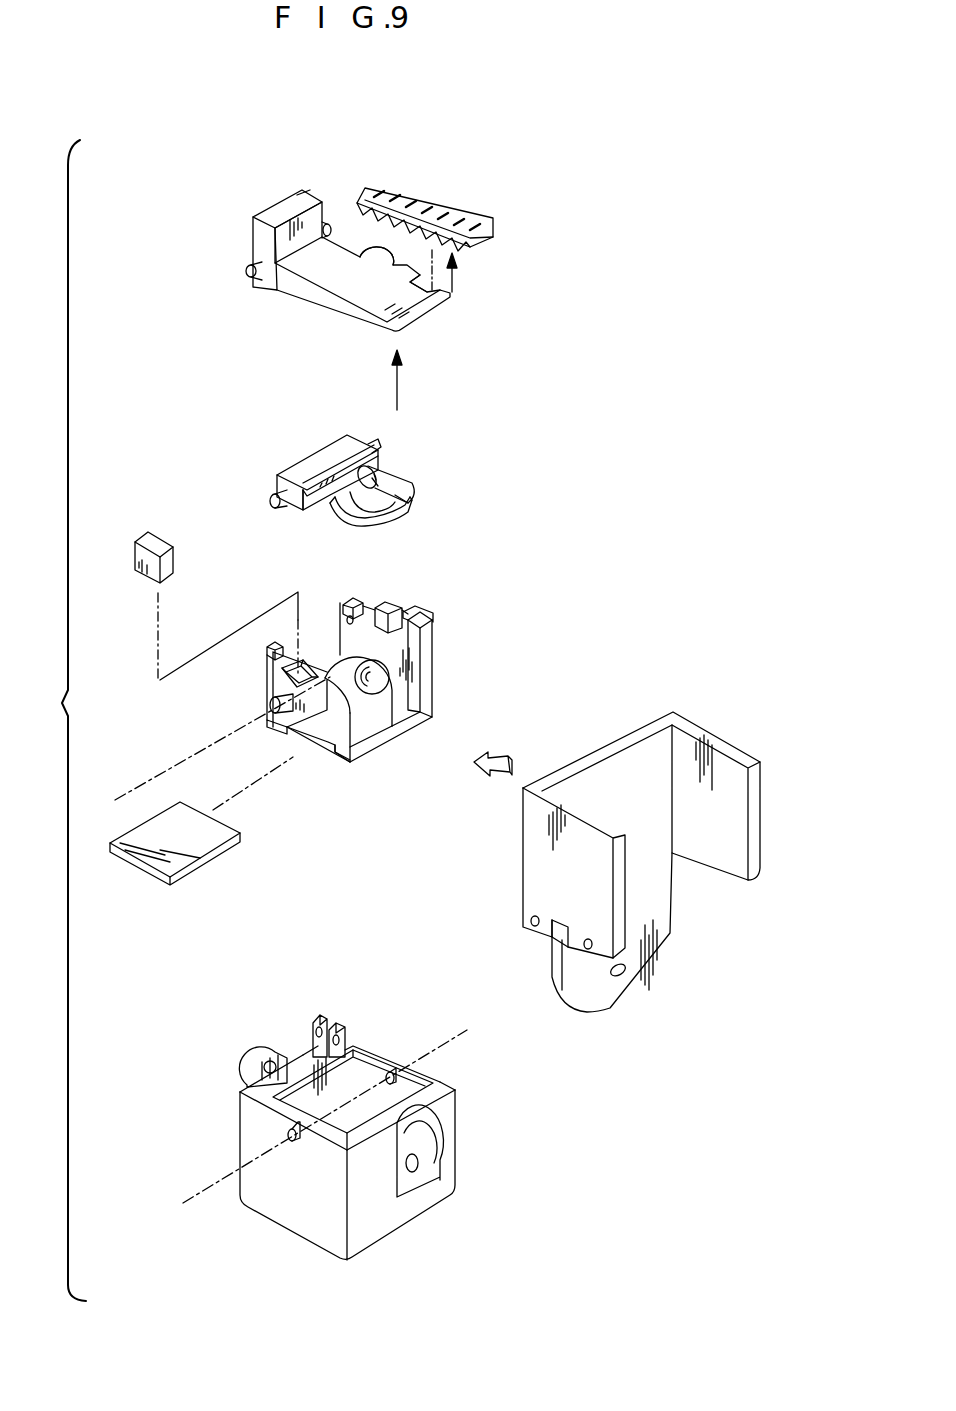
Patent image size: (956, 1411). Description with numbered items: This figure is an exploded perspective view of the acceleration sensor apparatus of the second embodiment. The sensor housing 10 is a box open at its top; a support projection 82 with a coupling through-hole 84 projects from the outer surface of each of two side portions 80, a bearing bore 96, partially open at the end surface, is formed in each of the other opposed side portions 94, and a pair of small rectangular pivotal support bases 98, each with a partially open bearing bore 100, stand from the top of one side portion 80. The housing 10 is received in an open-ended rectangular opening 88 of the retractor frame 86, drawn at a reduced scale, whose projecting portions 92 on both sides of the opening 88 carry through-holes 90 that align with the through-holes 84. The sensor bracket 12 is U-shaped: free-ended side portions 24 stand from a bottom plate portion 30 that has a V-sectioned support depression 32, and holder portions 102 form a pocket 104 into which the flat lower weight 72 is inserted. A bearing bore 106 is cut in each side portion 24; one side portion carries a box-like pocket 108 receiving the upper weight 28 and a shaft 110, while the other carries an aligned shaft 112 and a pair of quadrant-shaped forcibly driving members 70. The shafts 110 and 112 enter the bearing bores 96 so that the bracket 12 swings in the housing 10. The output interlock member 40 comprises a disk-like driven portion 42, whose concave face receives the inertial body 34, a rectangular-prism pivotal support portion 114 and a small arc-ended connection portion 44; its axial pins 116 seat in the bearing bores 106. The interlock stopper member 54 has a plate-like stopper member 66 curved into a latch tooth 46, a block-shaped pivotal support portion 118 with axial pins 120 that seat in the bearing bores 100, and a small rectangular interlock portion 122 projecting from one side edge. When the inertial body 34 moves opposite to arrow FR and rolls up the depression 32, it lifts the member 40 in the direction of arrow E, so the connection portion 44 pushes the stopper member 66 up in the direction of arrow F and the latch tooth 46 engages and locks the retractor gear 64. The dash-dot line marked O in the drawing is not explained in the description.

The sensor housing 10 is at (348, 1115).
The sensor bracket 12 is at (367, 711).
The free-ended side portions 24 is at (427, 657).
The upper weight 28 is at (162, 538).
The bottom plate portion 30 is at (436, 687).
The support depression 32 is at (365, 730).
The inertial body 34 is at (373, 687).
The output interlock member 40 is at (412, 486).
The driven portion 42 is at (392, 525).
The connection portion 44 is at (410, 503).
The latch tooth 46 is at (437, 306).
The interlock stopper member 54 is at (263, 247).
The retractor gear 64 is at (447, 210).
The stopper member 66 is at (300, 280).
The forcibly driving members 70 is at (390, 606).
The lower weight 72 is at (203, 830).
The side portions 80 is at (307, 1055).
The support projection 82 is at (258, 1057).
The through-hole 84 is at (252, 1062).
The retractor frame 86 is at (657, 933).
The rectangular opening 88 is at (565, 940).
The through-hole 90 is at (592, 948).
The projecting portion 92 is at (530, 921).
The side portions 94 is at (418, 1093).
The bearing bore 96 is at (392, 1070).
The pivotal support bases 98 is at (357, 1115).
The bearing bore 100 is at (320, 1015).
The holder portions 102 is at (267, 710).
The pocket 104 is at (303, 742).
The bearing bore 106 is at (345, 612).
The pocket 108 is at (313, 732).
The shaft 110 is at (270, 704).
The shaft 112 is at (435, 618).
The pivotal support portion 114 is at (312, 463).
The axial pins 116 is at (377, 446).
The pivotal support portion 118 is at (284, 204).
The axial pins 120 is at (326, 226).
The interlock portion 122 is at (360, 258).
The arrow E is at (399, 385).
The arrow F is at (454, 272).
The arrow FR is at (500, 763).
The axis O is at (182, 760).